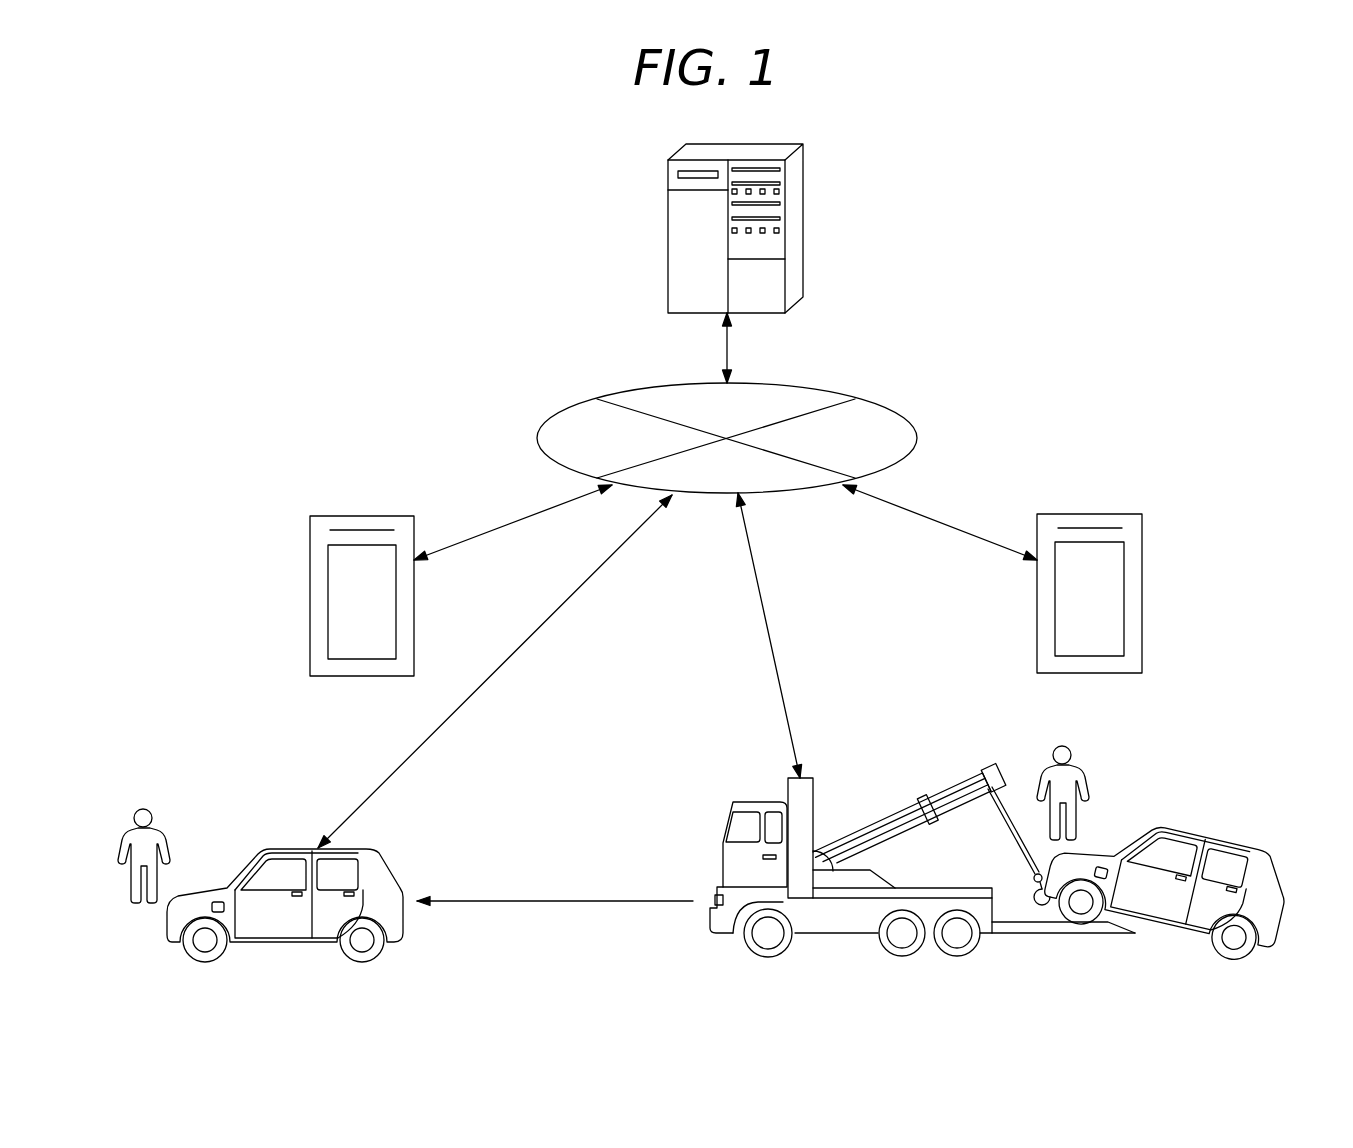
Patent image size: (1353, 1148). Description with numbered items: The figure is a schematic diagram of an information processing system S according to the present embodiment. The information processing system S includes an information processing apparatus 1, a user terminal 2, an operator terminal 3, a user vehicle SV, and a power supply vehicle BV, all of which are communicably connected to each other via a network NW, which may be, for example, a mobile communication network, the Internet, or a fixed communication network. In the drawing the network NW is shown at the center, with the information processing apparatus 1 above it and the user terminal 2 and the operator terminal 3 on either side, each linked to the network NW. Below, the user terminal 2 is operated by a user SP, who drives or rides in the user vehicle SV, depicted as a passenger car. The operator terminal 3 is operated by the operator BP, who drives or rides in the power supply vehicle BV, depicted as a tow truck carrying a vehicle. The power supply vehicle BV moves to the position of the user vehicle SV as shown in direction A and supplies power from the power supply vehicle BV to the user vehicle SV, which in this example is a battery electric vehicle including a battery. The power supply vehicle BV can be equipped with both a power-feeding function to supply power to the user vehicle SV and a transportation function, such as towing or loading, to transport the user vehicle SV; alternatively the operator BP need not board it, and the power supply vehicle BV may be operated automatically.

The information processing apparatus 1 is at (803, 218).
The user terminal 2 is at (333, 516).
The operator terminal 3 is at (1117, 514).
The network NW is at (838, 393).
The information processing system S is at (985, 336).
The user SP is at (162, 831).
The user vehicle SV is at (386, 868).
The power supply vehicle BV is at (773, 799).
The operator BP is at (1048, 768).
The direction A is at (555, 889).